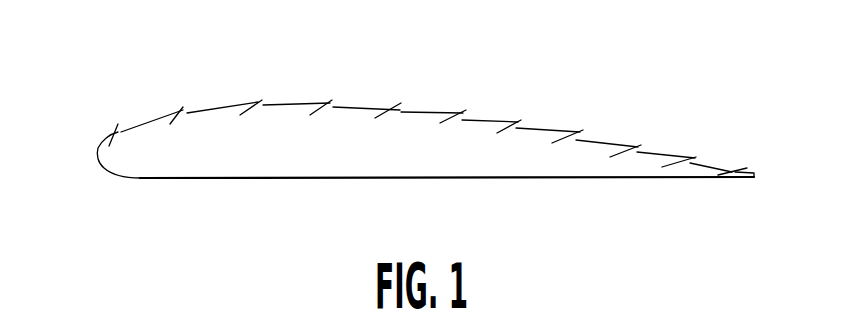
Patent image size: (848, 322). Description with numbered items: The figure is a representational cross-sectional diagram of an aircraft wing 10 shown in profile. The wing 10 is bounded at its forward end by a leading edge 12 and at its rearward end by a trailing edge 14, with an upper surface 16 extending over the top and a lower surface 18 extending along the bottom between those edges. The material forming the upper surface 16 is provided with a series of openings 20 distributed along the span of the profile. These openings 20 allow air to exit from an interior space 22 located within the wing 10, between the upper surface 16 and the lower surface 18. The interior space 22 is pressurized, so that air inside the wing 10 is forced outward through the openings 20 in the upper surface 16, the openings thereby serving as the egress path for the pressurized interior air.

The aircraft wing 10 is at (561, 73).
The leading edge 12 is at (98, 157).
The trailing edge 14 is at (747, 168).
The upper surface 16 is at (421, 112).
The lower surface 18 is at (502, 179).
The openings 20 is at (176, 116).
The interior space 22 is at (336, 160).